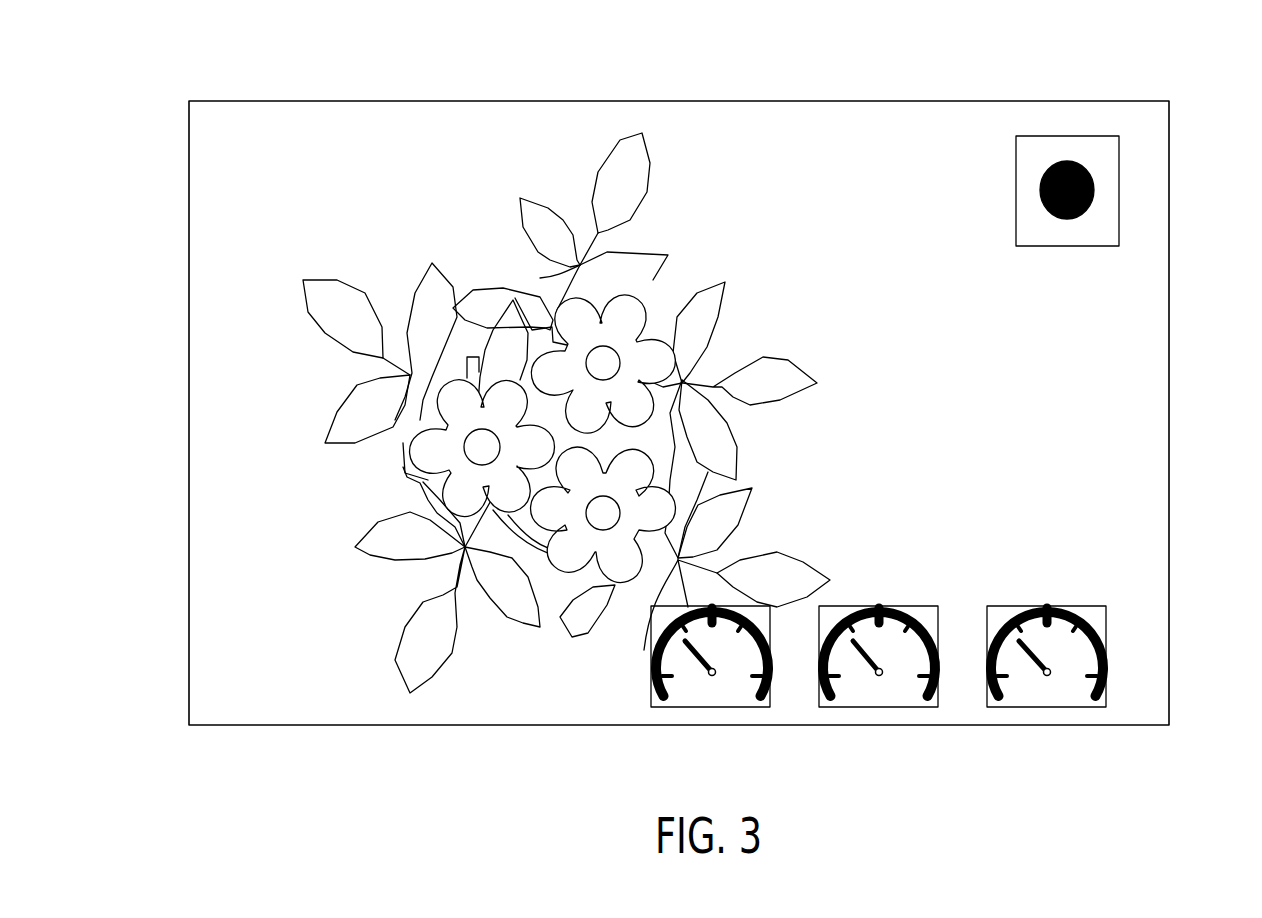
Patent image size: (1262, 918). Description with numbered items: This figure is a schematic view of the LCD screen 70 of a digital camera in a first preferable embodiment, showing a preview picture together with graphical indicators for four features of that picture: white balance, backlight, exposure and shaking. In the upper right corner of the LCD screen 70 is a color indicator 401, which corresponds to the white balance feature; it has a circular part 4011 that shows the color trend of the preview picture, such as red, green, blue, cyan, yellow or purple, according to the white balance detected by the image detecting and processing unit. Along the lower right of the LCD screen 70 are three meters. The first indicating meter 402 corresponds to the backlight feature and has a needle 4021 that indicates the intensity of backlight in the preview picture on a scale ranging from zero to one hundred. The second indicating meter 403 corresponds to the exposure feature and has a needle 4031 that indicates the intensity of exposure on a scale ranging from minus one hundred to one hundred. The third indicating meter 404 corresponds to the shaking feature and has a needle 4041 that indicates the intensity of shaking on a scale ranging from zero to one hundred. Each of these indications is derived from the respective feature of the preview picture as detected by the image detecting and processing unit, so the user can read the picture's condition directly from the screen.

The LCD screen 70 is at (1171, 246).
The color indicator 401 is at (1102, 129).
The circular part 4011 is at (1060, 162).
The first indicating meter 402 is at (773, 622).
The needle 4021 is at (698, 678).
The second indicating meter 403 is at (909, 606).
The needle 4031 is at (877, 678).
The third indicating meter 404 is at (1077, 605).
The needle 4041 is at (1032, 678).